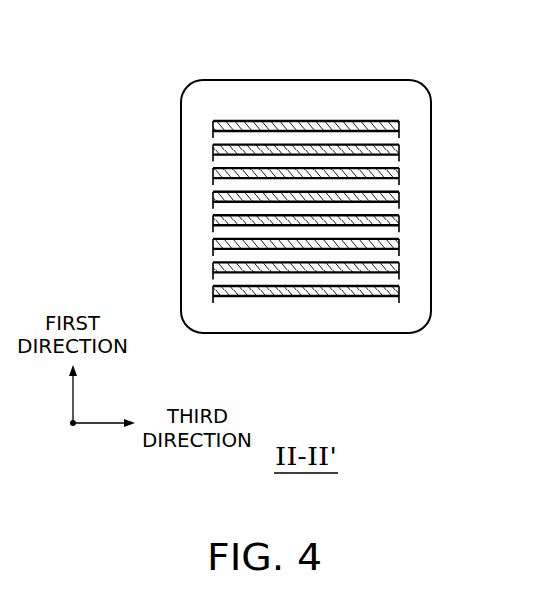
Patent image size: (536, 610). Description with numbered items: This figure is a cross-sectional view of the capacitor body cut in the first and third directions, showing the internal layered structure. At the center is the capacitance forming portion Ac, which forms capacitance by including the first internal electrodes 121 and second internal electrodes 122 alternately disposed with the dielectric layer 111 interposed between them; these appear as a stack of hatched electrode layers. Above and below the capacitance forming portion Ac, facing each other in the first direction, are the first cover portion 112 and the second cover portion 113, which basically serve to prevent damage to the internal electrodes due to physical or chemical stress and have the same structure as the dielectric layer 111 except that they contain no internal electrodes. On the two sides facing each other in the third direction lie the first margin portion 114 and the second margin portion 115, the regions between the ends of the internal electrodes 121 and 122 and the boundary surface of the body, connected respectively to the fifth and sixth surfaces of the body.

The dielectric layer 111 is at (389, 142).
The first cover portion 112 is at (301, 92).
The second cover portion 113 is at (301, 322).
The first margin portion 114 is at (190, 238).
The second margin portion 115 is at (425, 237).
The first internal electrode 121 is at (386, 122).
The second internal electrode 122 is at (395, 150).
The capacitance forming portion Ac is at (213, 208).